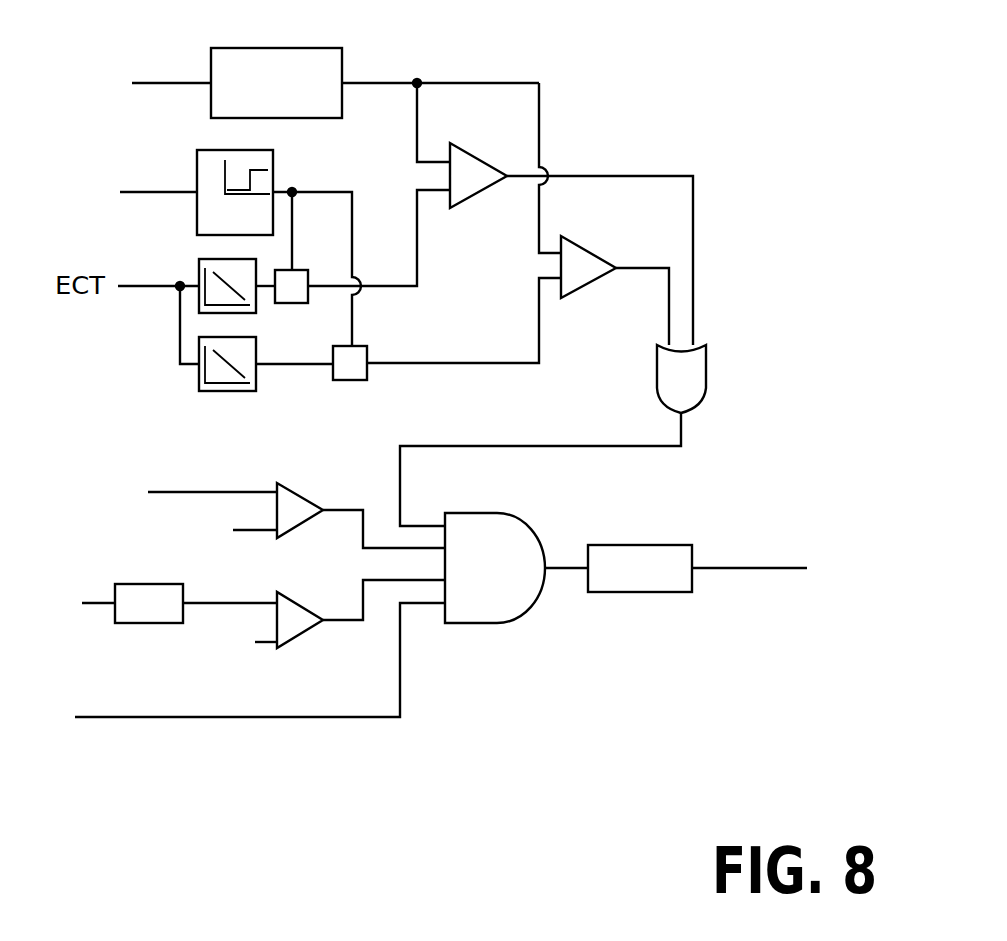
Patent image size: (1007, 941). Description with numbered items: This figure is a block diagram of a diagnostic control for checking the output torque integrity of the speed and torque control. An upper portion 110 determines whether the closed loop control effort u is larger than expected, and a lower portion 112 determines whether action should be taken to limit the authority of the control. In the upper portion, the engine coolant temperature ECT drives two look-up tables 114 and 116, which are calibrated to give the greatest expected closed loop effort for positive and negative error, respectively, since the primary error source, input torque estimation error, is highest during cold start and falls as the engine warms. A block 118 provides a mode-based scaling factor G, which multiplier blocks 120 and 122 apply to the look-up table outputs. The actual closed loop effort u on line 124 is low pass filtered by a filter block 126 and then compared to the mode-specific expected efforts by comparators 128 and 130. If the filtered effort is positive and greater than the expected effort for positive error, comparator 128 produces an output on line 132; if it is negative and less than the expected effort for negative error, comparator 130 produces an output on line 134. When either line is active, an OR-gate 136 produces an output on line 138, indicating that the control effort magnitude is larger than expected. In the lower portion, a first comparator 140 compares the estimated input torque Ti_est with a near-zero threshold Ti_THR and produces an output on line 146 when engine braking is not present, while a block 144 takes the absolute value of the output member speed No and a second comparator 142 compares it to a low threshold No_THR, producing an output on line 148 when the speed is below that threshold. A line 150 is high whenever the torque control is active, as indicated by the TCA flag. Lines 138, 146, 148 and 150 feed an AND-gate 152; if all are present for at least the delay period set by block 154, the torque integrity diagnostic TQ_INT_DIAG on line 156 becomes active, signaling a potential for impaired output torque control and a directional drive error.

The diagram portion for determining if closed loop control effort is larger than exp 110 is at (656, 119).
The diagram portion for determining if action should be taken to limit control autho 112 is at (462, 684).
The look-up table 114 is at (199, 268).
The look-up table 116 is at (256, 383).
The mode-based scaling factor block 118 is at (197, 160).
The multiplier block 120 is at (310, 268).
The multiplier block 122 is at (367, 360).
The line carrying actual closed loop effort u 124 is at (172, 82).
The low pass filter block 126 is at (309, 48).
The comparator 128 is at (480, 195).
The comparator 130 is at (592, 290).
The output line of comparator 128 132 is at (693, 213).
The output line of comparator 130 134 is at (669, 323).
The OR-gate 136 is at (700, 395).
The OR-gate output line 138 is at (550, 446).
The first comparator 140 is at (285, 485).
The second comparator 142 is at (305, 604).
The absolute value block 144 is at (165, 584).
The output line of comparator 140 146 is at (372, 520).
The output line of comparator 142 148 is at (372, 633).
The torque control active line 150 is at (247, 718).
The AND-gate 152 is at (533, 613).
The delay block 154 is at (640, 592).
The torque integrity diagnostic output line 156 is at (745, 569).